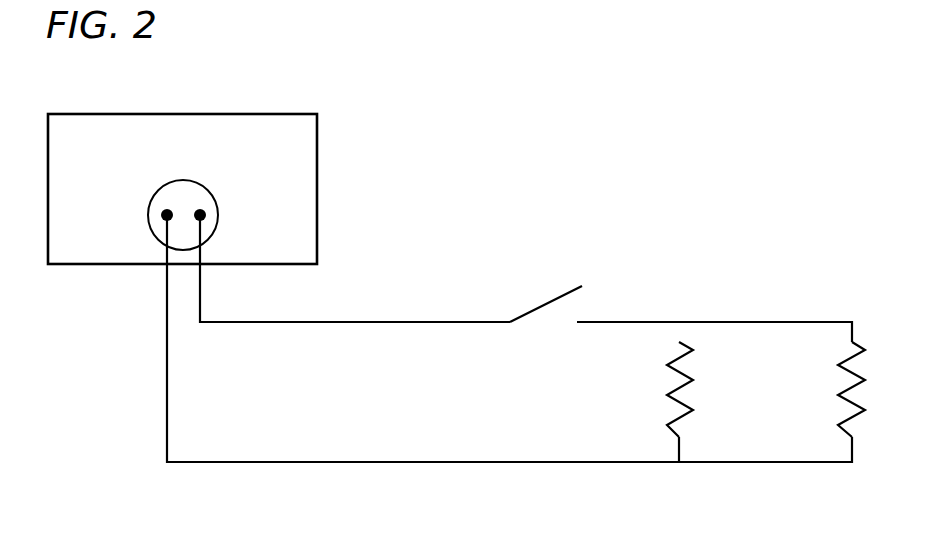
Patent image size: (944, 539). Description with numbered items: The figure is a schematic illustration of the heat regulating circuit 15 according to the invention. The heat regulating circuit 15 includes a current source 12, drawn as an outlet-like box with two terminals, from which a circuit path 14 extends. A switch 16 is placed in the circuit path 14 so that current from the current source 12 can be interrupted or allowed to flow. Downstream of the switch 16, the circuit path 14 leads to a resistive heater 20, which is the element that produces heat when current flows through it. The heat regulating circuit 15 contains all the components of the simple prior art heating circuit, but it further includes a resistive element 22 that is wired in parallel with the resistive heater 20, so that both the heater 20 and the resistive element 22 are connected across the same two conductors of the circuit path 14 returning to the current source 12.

The current source 12 is at (183, 113).
The circuit path 14 is at (448, 464).
The heat regulating circuit 15 is at (604, 276).
The switch 16 is at (527, 311).
The resistive heater 20 is at (678, 358).
The resistive element 22 is at (845, 358).